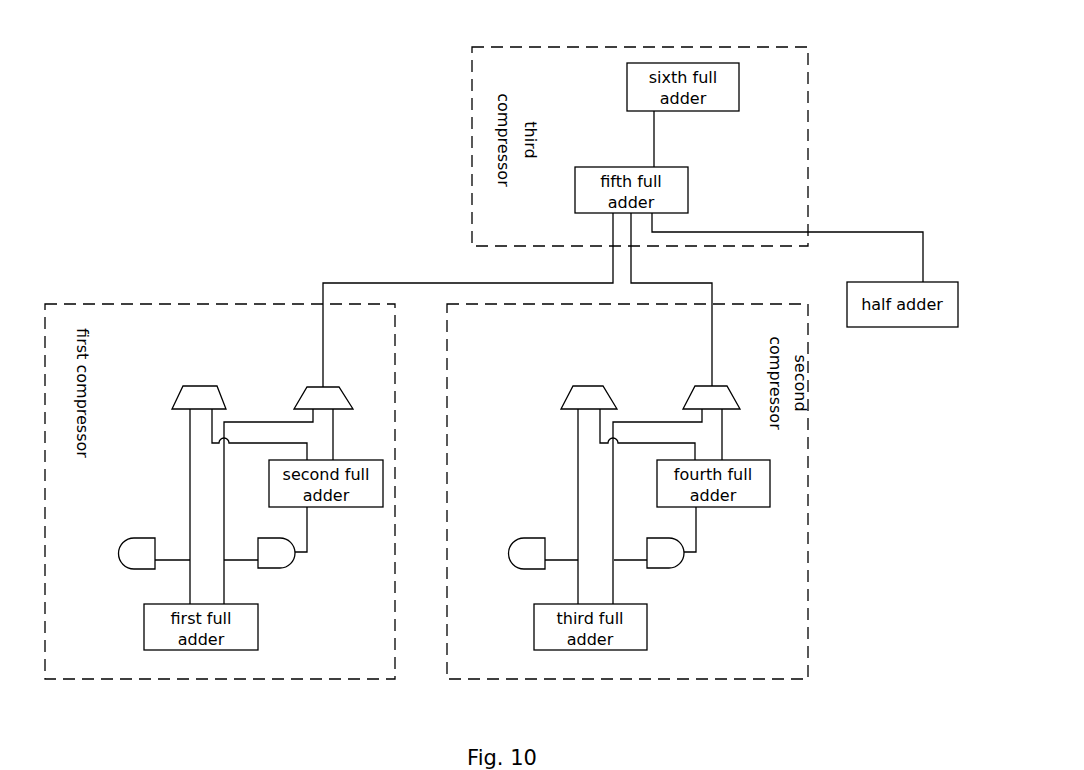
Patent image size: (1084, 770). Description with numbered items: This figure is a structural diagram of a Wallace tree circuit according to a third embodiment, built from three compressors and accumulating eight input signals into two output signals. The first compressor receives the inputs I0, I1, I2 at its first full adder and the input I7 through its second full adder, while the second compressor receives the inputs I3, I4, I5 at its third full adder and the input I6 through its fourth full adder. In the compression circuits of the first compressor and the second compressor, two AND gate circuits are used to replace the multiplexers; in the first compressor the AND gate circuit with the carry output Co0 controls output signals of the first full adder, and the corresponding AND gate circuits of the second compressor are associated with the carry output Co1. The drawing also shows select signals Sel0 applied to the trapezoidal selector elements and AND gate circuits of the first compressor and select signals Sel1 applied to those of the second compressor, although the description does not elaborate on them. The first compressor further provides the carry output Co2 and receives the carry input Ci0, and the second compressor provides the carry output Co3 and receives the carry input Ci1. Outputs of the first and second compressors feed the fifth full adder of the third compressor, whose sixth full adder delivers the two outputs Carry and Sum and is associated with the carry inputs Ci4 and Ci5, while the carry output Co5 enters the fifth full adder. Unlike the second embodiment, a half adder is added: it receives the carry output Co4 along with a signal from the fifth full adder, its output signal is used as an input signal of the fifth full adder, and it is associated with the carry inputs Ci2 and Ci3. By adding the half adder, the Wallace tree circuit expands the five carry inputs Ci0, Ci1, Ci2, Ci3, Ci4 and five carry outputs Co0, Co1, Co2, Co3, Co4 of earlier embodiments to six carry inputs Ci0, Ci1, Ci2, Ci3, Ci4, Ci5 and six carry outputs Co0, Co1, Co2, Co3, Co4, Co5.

The output Carry is at (664, 63).
The output Sum is at (703, 63).
The carry input Ci4 is at (683, 111).
The carry input Ci5 is at (711, 111).
The carry output Co5 is at (604, 167).
The carry output Co4 is at (887, 282).
The carry input Ci2 is at (878, 327).
The carry input Ci3 is at (937, 327).
The carry output Co2 is at (202, 386).
The select signal 0 Sel0 is at (177, 397).
The carry output Co0 is at (119, 553).
The carry input Ci0 is at (345, 507).
The input I0 is at (178, 650).
The input I1 is at (202, 650).
The input I2 is at (224, 650).
The input I7 is at (326, 507).
The carry output Co3 is at (586, 354).
The select signal 1 Sel1 is at (590, 468).
The carry output Co1 is at (480, 551).
The carry input Ci1 is at (737, 544).
The input I3 is at (567, 685).
The input I4 is at (590, 685).
The input I5 is at (613, 685).
The input I6 is at (713, 614).